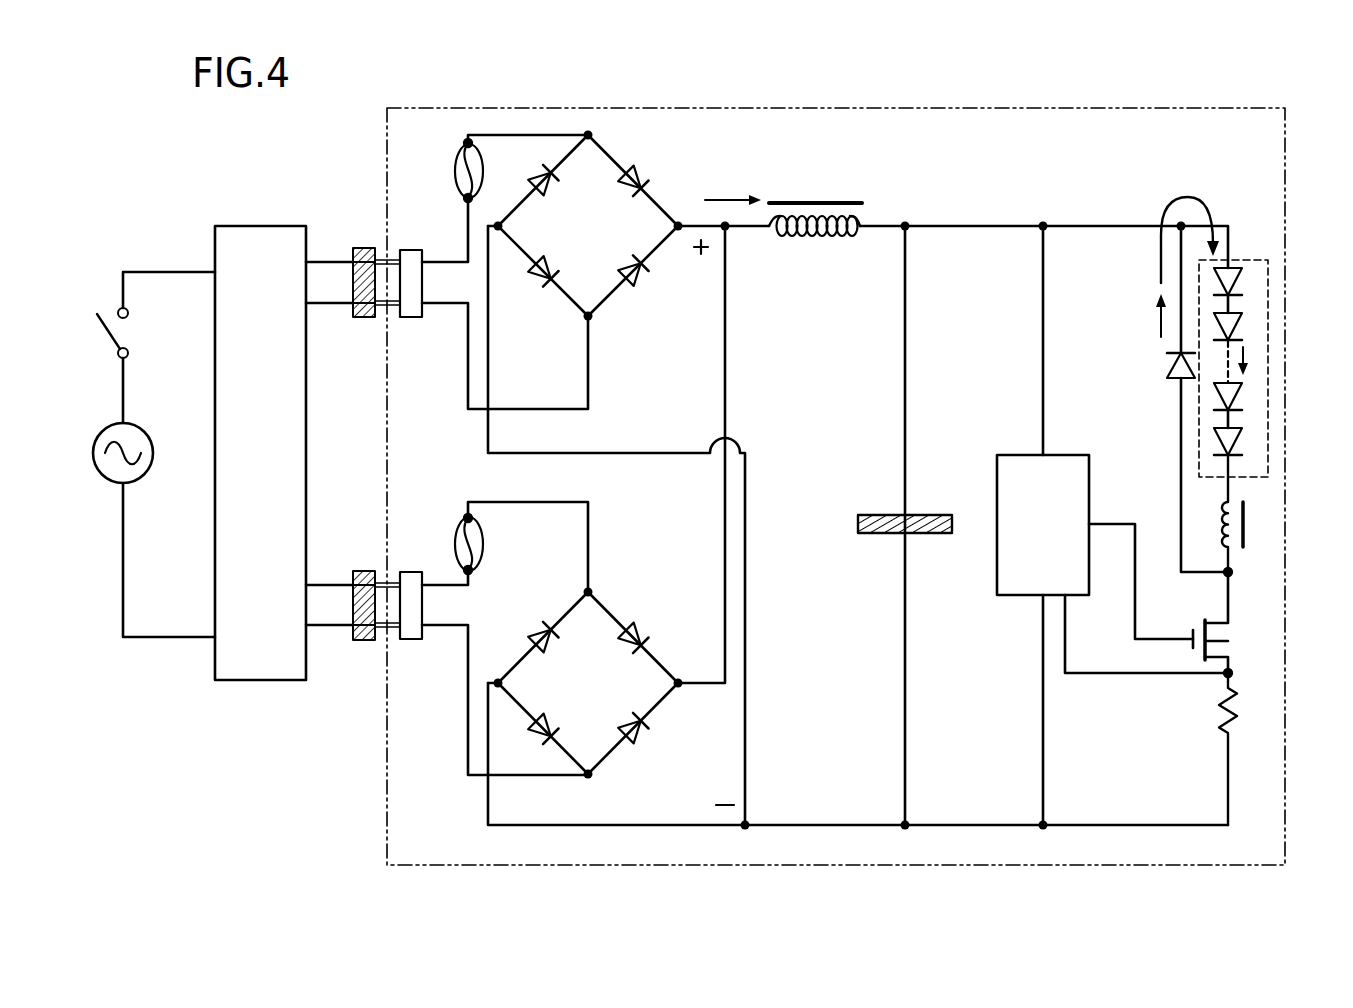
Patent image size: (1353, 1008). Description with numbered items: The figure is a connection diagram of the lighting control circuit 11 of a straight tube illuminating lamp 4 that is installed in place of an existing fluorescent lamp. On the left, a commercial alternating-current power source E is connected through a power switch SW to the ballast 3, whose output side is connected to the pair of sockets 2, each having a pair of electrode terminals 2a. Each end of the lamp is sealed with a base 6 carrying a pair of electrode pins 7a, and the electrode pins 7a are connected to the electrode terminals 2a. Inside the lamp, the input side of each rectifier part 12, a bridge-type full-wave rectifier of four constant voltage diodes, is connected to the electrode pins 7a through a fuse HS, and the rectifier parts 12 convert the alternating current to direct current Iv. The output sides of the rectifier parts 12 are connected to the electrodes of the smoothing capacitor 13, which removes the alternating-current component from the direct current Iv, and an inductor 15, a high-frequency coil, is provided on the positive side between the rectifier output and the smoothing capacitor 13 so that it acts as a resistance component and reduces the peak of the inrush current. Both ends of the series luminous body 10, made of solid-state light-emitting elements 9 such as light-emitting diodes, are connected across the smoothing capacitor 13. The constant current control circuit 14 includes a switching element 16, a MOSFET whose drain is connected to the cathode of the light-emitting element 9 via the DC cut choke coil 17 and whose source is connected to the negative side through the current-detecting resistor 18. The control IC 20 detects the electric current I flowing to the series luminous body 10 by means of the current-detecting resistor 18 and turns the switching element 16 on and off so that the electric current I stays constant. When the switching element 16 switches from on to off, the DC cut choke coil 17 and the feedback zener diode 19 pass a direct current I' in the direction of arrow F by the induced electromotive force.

The straight tube illuminating lamp 4 is at (795, 101).
The lighting control circuit 11 is at (882, 192).
The ballast 3 is at (266, 462).
The socket 2 is at (352, 288).
The electrode terminal 2a is at (362, 248).
The electrode pin 7a is at (392, 262).
The base 6 is at (422, 284).
The fuse HS is at (458, 172).
The rectifier part 12 is at (618, 155).
The inductor 15 is at (812, 196).
The smoothing capacitor 13 is at (880, 515).
The control IC 20 is at (1073, 455).
The constant current control circuit 14 is at (1021, 604).
The switching element 16 is at (1216, 622).
The DC cut choke coil 17 is at (1247, 527).
The current-detecting resistor 18 is at (1218, 712).
The feedback zener diode 19 is at (1167, 365).
The series luminous body 10 is at (1245, 260).
The solid-state light-emitting element 9 is at (1243, 393).
The power switch SW is at (103, 333).
The commercial alternating-current power source E is at (133, 426).
The direct current Iv is at (729, 195).
The electric current I is at (1273, 360).
The direct current I' is at (1139, 315).
The arrow F is at (1160, 260).